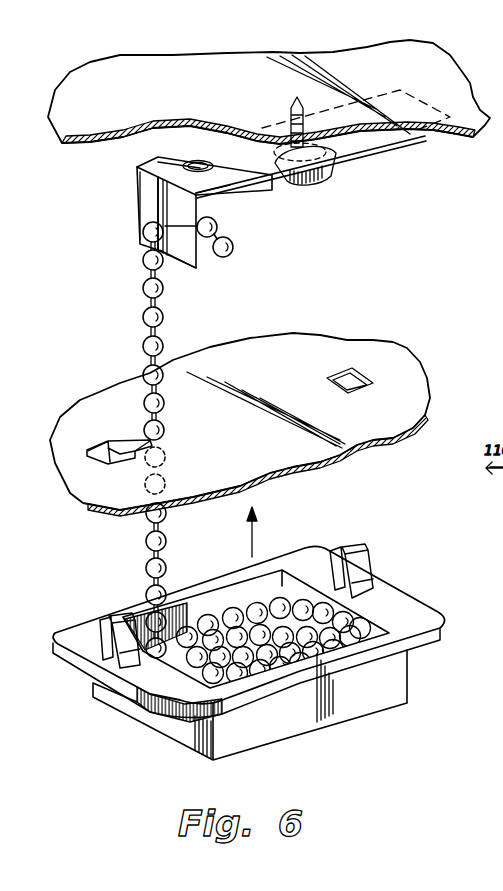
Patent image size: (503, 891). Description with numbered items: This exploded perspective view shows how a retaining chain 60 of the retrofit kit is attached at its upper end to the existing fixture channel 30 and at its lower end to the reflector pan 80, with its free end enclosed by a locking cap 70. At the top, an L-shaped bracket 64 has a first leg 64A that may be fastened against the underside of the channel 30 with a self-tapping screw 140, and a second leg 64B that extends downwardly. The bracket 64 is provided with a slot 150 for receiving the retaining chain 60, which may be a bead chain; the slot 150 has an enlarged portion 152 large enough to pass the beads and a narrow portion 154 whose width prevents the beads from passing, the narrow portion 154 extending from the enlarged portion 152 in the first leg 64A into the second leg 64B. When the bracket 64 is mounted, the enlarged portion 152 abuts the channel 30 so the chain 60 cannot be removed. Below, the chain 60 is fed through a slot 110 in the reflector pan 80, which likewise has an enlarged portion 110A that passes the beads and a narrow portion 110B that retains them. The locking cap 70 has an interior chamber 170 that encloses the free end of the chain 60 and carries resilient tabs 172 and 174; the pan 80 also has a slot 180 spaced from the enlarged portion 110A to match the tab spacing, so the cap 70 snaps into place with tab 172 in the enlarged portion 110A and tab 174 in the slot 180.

The channel 30 is at (208, 60).
The self-tapping screw 140 is at (318, 172).
The L-shaped bracket 64 is at (352, 160).
The first leg 64A is at (262, 187).
The second leg 64B is at (186, 270).
The slot 150 is at (167, 226).
The enlarged portion 152 is at (184, 154).
The narrow portion 154 is at (141, 212).
The retaining chain 60 is at (141, 285).
The reflector pan 80 is at (246, 429).
The slot 180 is at (365, 380).
The slot 110 is at (102, 449).
The enlarged portion 110A is at (107, 442).
The narrow portion 110B is at (134, 441).
The locking cap 70 is at (249, 635).
The interior chamber 170 is at (222, 596).
The resilient tab 172 is at (112, 617).
The resilient tab 174 is at (368, 547).